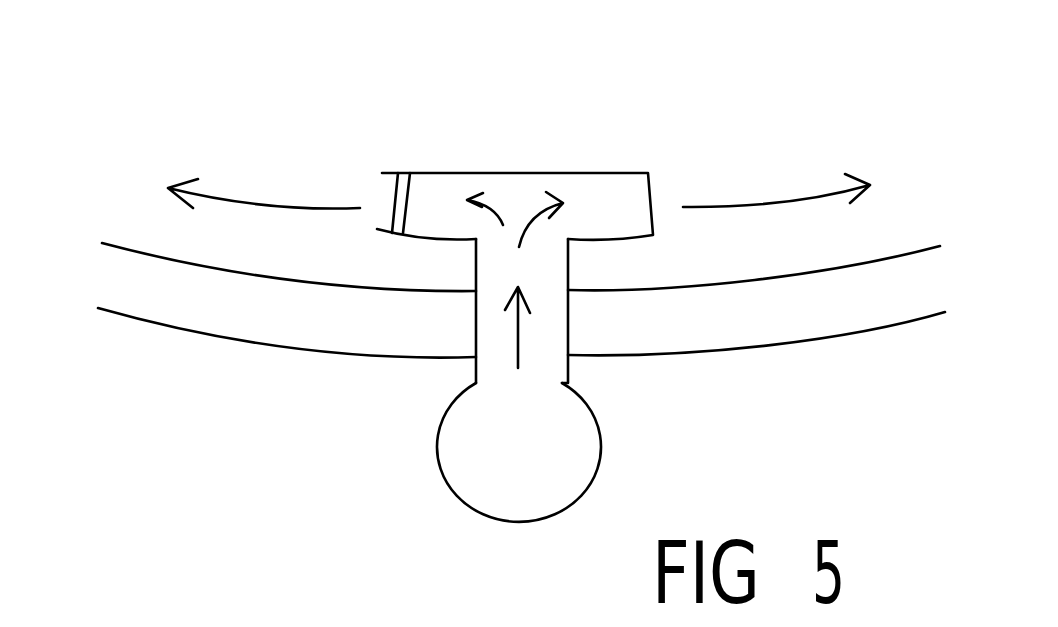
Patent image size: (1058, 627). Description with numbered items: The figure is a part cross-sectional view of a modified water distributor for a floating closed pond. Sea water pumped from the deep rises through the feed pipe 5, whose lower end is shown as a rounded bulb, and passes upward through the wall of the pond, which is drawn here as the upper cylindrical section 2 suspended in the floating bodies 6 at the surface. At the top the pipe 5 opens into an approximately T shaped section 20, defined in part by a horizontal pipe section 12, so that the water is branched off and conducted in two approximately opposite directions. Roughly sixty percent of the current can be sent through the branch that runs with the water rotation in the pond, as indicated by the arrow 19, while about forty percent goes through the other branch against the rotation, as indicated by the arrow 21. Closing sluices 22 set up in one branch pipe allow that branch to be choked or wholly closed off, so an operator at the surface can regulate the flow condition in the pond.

The upper approximately cylindrical section 2 is at (927, 247).
The feed pipe 5 is at (590, 453).
The floating bodies 6 is at (257, 323).
The horizontal pipe section 12 is at (490, 333).
The arrow 19 is at (218, 193).
The T shaped section 20 is at (560, 147).
The arrow 21 is at (783, 200).
The closing sluices 22 is at (395, 205).